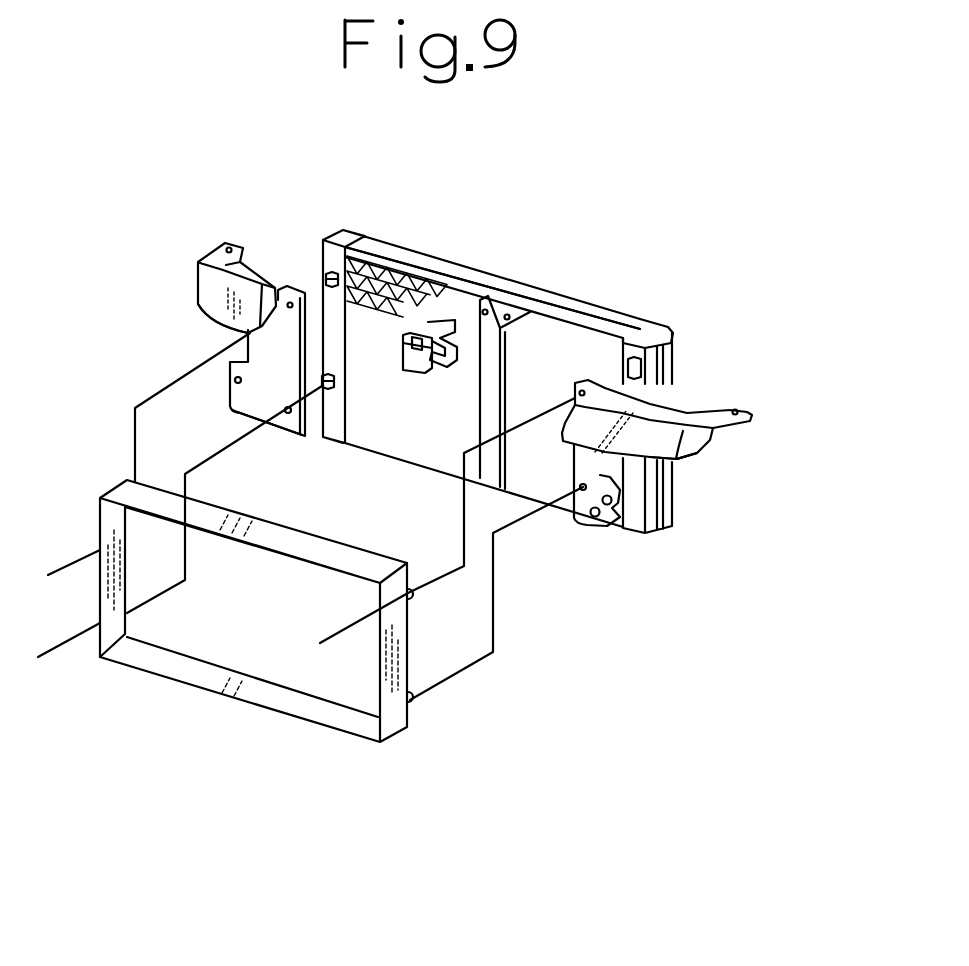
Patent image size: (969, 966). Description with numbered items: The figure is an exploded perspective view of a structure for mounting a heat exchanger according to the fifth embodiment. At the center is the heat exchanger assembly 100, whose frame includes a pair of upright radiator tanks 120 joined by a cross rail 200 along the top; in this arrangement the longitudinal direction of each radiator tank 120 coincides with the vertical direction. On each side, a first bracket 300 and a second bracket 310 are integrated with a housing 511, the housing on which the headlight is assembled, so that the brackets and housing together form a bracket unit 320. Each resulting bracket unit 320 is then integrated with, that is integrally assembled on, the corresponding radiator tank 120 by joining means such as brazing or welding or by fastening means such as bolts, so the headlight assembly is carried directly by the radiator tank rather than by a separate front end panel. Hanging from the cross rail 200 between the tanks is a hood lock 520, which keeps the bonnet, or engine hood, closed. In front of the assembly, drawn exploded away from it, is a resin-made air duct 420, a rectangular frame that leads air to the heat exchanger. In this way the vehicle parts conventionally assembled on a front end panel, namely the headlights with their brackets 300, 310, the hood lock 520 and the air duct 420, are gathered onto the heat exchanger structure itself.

The frame 100 is at (608, 316).
The radiator tank 120 is at (352, 236).
The cross rail 200 is at (529, 300).
The first bracket 300 is at (244, 268).
The second bracket 310 is at (238, 397).
The bracket unit 320 is at (218, 295).
The housing 511 is at (662, 452).
The hood lock 520 is at (417, 368).
The air duct 420 is at (390, 723).